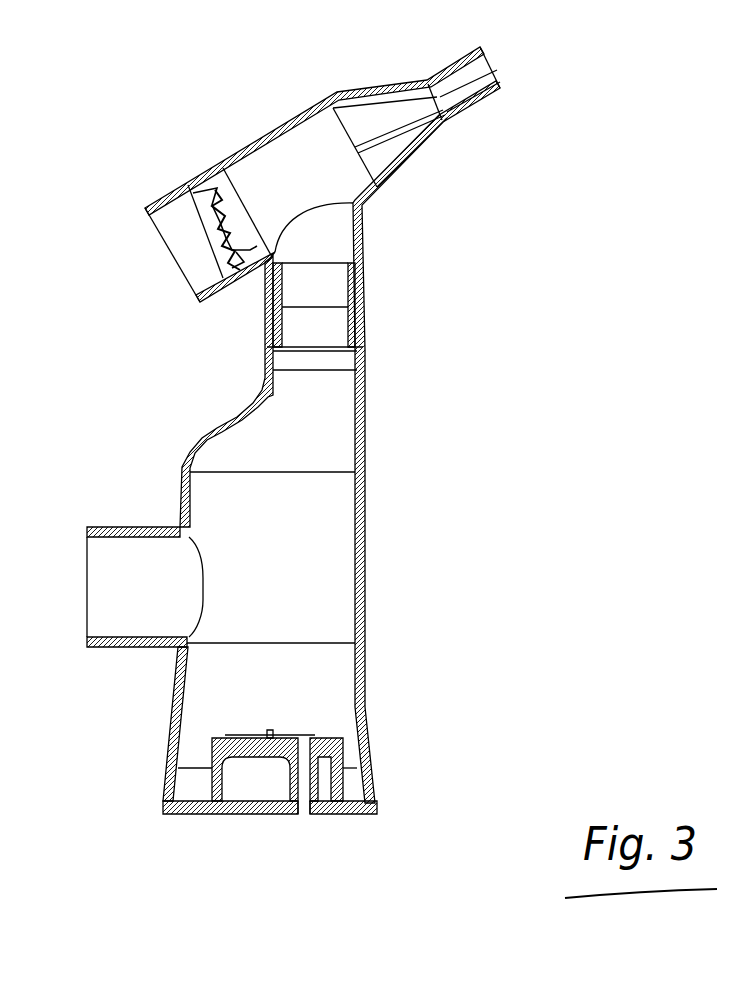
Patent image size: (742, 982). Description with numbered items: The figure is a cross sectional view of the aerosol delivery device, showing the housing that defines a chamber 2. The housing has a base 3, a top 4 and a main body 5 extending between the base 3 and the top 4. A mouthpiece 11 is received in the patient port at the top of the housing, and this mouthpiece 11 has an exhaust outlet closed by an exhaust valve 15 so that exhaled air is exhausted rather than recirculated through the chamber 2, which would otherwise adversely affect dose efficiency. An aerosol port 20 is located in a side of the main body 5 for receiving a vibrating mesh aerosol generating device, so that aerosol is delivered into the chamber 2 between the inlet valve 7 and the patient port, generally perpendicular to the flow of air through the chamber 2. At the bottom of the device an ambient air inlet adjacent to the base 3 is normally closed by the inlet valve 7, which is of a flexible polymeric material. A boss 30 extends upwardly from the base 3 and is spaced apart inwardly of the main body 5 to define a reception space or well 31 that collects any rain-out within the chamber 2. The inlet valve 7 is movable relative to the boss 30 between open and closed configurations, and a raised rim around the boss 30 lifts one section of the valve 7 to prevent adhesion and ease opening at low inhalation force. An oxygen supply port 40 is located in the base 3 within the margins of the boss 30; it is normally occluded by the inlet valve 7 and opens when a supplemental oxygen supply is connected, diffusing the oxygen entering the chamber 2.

The mouthpiece 11 is at (283, 123).
The exhaust valve 15 is at (195, 208).
The top 4 is at (360, 318).
The chamber 2 is at (338, 503).
The main body 5 is at (362, 565).
The aerosol port 20 is at (102, 647).
The inlet valve 7 is at (236, 735).
The boss 30 is at (210, 757).
The reception space or well 31 is at (185, 783).
The base 3 is at (195, 815).
The oxygen supply port 40 is at (303, 792).